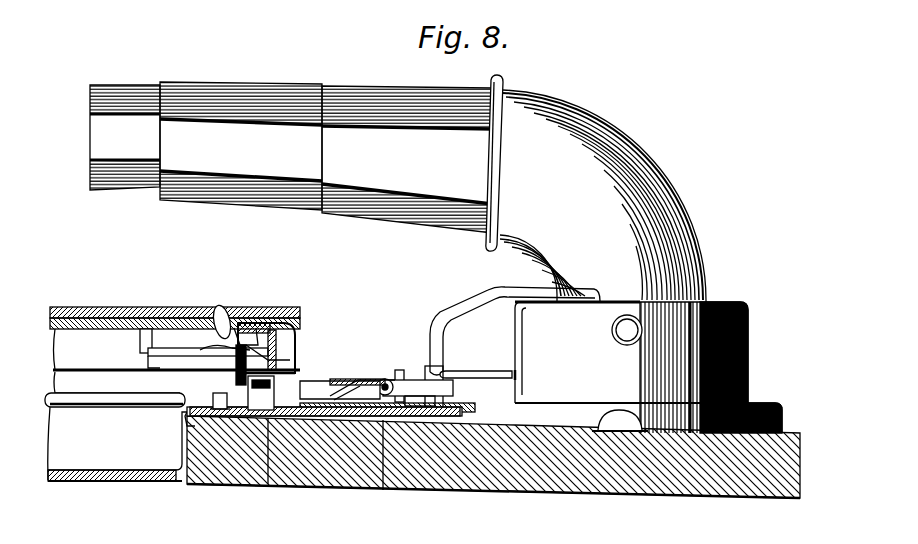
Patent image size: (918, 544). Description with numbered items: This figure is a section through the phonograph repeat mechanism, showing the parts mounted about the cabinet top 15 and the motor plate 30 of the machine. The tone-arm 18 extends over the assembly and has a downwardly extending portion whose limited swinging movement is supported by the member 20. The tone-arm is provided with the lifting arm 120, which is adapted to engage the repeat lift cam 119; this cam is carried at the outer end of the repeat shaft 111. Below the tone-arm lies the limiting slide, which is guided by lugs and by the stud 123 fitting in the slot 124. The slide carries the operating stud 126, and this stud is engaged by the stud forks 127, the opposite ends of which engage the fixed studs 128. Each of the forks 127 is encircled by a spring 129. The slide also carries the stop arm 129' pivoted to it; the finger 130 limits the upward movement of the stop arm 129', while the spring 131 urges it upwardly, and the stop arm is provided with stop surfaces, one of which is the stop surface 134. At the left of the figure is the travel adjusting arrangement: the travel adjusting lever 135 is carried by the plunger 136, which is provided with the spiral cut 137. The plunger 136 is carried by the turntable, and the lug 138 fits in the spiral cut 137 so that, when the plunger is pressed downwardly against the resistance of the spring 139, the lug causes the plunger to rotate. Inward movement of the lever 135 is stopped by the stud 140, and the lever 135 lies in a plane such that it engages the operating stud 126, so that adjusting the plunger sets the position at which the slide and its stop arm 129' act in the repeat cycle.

The cabinet top 15 is at (583, 492).
The tone-arm 18 is at (398, 188).
The member 20 is at (648, 367).
The motor plate 30 is at (146, 476).
The repeat shaft 111 is at (96, 410).
The repeat lift cam 119 is at (450, 378).
The lifting arm 120 is at (456, 312).
The stud 123 is at (196, 402).
The slot 124 is at (194, 416).
The operating stud 126 is at (250, 362).
The stud forks 127 is at (268, 484).
The fixed studs 128 is at (205, 420).
The spring 129 is at (233, 446).
The stop arm 129' is at (366, 375).
The finger 130 is at (345, 390).
The spring 131 is at (383, 490).
The stop surface 134 is at (514, 370).
The travel adjusting lever 135 is at (181, 348).
The plunger 136 is at (244, 326).
The spiral cut 137 is at (223, 306).
The lug 138 is at (268, 323).
The spring 139 is at (290, 330).
The stud 140 is at (147, 332).